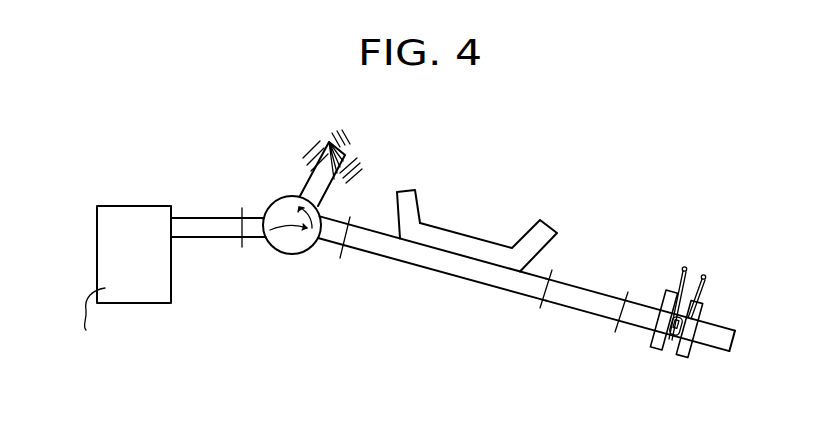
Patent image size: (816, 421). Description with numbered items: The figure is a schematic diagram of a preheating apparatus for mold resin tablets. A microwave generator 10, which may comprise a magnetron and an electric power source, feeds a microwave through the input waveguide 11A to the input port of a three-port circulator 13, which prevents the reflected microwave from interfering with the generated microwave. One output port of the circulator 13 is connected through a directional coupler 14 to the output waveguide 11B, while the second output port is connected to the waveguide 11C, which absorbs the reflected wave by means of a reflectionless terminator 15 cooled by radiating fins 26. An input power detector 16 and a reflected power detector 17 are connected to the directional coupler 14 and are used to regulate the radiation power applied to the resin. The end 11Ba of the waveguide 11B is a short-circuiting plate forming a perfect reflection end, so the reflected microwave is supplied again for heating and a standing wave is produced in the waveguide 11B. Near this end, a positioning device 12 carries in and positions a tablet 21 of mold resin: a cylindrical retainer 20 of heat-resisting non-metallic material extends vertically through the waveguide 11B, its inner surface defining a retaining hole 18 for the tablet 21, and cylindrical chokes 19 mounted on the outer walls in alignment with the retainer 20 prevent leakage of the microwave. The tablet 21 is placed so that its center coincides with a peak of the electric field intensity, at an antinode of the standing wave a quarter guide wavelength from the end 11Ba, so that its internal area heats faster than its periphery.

The microwave generator 10 is at (132, 212).
The input waveguide 11A is at (213, 227).
The output waveguide 11B is at (570, 310).
The end of the waveguide 11Ba is at (738, 345).
The waveguide 11C is at (320, 197).
The positioning device 12 is at (710, 308).
The circulator 13 is at (273, 198).
The directional coupler 14 is at (442, 268).
The reflectionless terminator 15 is at (343, 152).
The input power detector 16 is at (543, 230).
The reflected power detector 17 is at (415, 210).
The retaining hole 18 is at (680, 292).
The cylindrical choke 19 is at (665, 297).
The cylindrical retainer 20 is at (698, 288).
The tablet 21 is at (682, 327).
The radiating fins 26 is at (357, 165).